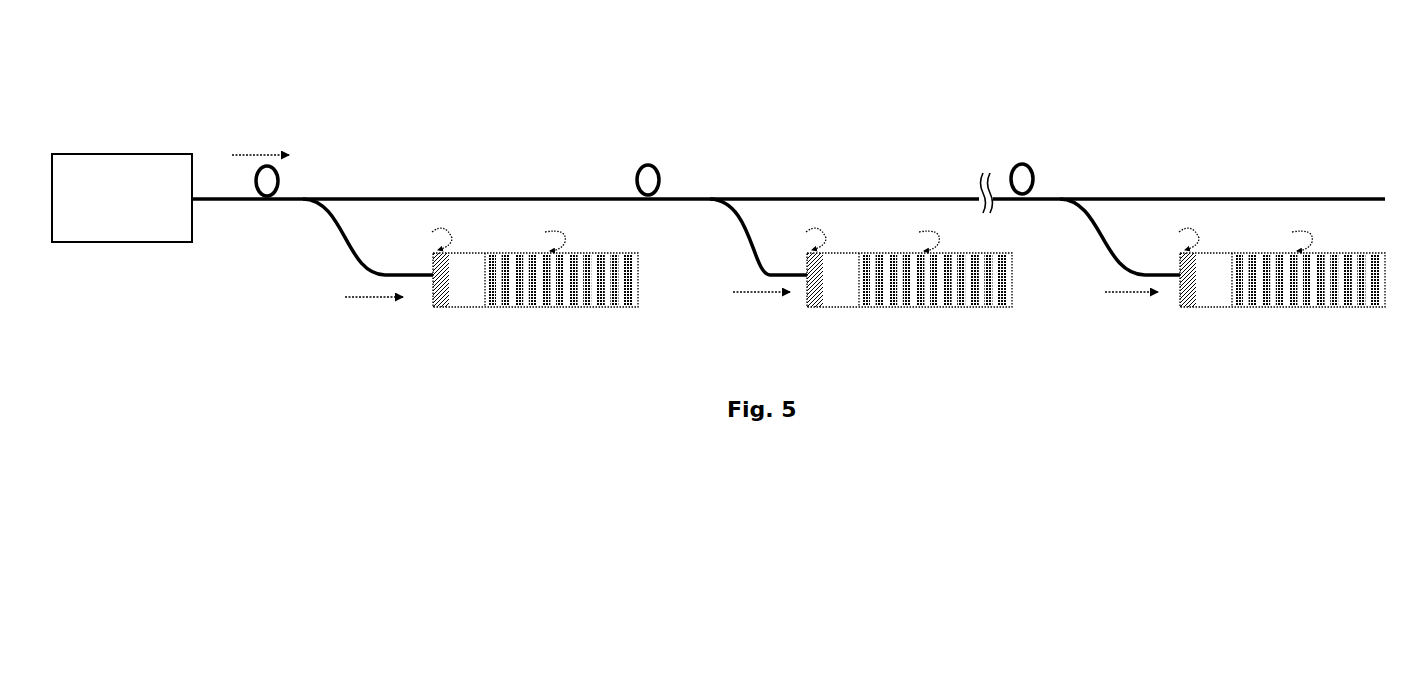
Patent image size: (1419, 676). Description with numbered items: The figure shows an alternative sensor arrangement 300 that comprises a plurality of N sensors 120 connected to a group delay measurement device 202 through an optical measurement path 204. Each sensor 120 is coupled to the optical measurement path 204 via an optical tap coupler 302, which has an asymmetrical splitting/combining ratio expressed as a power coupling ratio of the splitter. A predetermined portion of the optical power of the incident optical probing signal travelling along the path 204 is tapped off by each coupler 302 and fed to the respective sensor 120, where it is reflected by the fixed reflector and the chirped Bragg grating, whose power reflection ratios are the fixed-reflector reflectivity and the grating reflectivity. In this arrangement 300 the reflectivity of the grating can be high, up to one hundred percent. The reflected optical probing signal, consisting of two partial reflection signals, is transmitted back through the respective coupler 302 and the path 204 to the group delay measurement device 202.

The sensor arrangement 300 is at (725, 97).
The group delay measurement device 202 is at (142, 228).
The optical measurement path 204 is at (534, 194).
The optical tap coupler 302 is at (322, 191).
The sensor 120 is at (467, 310).